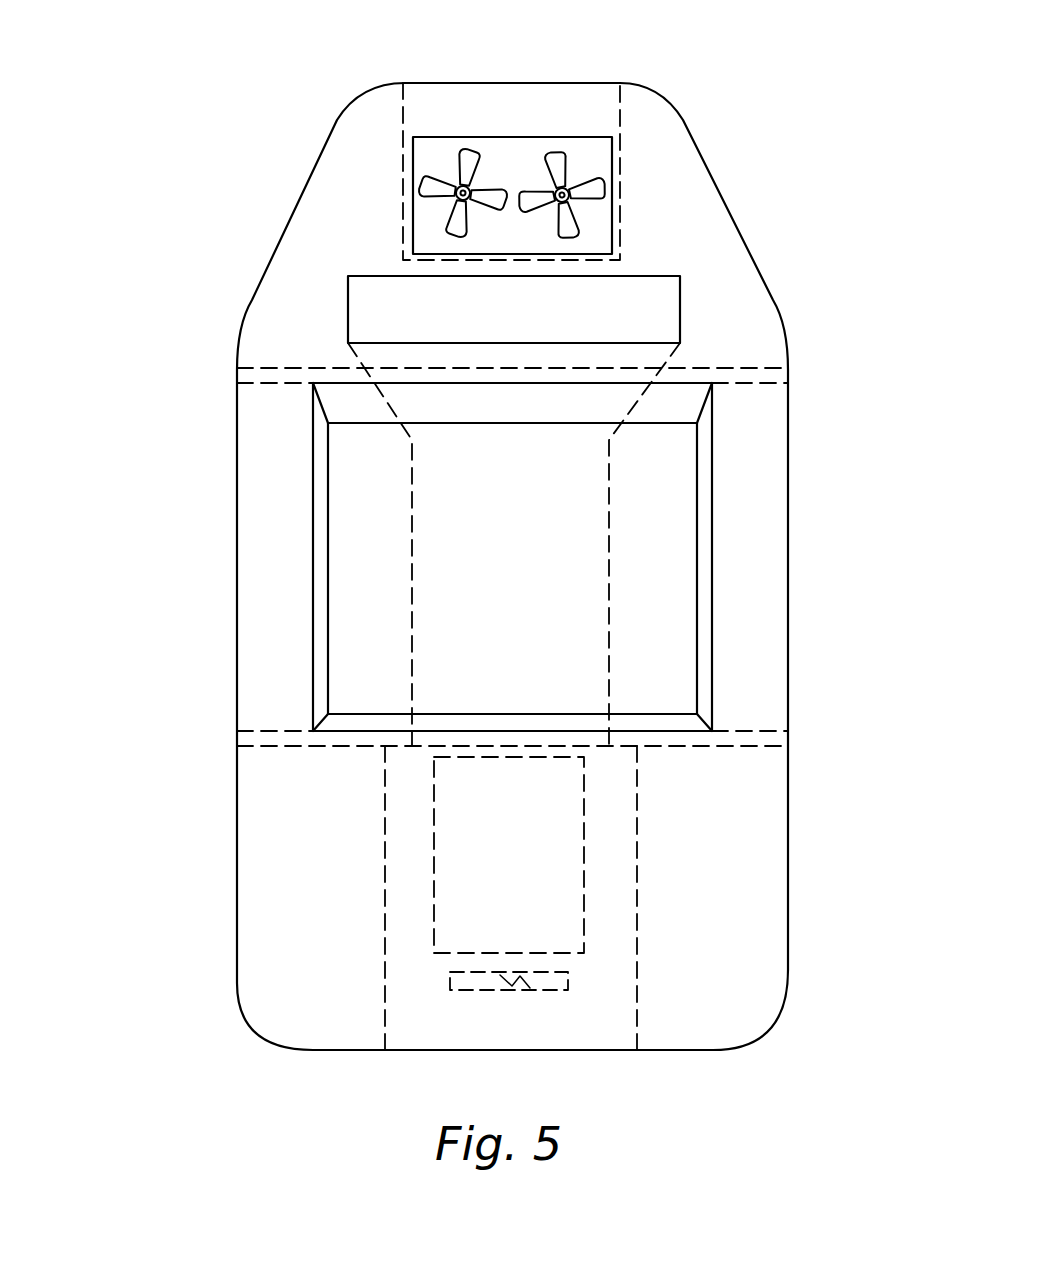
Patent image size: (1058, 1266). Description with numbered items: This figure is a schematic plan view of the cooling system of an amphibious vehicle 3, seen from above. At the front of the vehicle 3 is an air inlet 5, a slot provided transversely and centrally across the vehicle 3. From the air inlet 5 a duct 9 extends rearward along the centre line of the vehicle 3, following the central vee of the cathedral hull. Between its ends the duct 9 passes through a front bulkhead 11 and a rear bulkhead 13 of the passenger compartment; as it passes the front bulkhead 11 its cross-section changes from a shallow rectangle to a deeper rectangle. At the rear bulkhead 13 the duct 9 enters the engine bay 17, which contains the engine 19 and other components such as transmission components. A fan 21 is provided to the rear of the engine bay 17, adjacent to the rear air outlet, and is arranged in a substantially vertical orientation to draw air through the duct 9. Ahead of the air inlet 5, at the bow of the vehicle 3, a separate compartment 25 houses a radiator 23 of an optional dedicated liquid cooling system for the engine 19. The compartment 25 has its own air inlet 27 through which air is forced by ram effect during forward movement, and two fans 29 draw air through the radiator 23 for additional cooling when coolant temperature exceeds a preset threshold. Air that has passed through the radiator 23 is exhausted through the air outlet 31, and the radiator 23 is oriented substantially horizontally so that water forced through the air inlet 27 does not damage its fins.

The amphibious vehicle 3 is at (788, 695).
The air inlet 5 is at (627, 298).
The duct 9 is at (612, 632).
The front bulkhead 11 is at (258, 375).
The rear bulkhead 13 is at (272, 737).
The engine bay 17 is at (407, 972).
The engine 19 is at (585, 802).
The fan 21 is at (567, 990).
The radiator 23 is at (430, 155).
The compartment 25 is at (412, 204).
The air inlet 27 is at (560, 95).
The fans 29 is at (583, 225).
The air outlet 31 is at (600, 158).